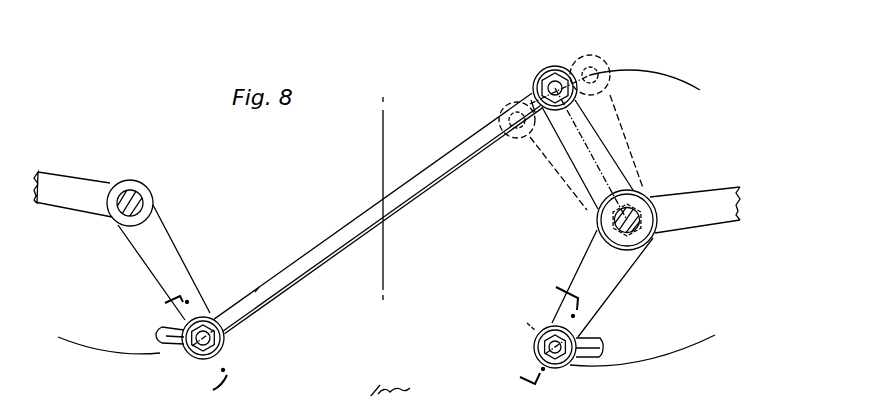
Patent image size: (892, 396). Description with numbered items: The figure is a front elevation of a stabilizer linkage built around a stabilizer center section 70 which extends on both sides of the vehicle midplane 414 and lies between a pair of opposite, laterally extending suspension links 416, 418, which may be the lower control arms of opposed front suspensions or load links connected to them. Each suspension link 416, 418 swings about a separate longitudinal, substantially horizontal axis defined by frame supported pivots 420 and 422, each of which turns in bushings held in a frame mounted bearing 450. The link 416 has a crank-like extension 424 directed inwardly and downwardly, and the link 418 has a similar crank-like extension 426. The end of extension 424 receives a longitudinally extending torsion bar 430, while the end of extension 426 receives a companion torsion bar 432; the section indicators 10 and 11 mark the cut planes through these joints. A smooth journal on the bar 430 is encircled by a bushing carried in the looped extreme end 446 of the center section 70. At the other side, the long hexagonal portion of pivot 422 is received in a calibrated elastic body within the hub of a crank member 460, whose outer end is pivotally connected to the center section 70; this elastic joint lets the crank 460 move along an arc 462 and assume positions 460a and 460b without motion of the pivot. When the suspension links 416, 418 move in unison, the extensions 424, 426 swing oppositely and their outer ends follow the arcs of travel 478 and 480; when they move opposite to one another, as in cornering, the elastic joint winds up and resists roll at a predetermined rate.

The midplane 414 is at (385, 136).
The suspension link 416 is at (83, 200).
The suspension link 418 is at (697, 198).
The frame supported pivot 420 is at (142, 203).
The frame supported pivot 422 is at (617, 221).
The crank-like extension 424 is at (180, 267).
The crank-like extension 426 is at (588, 257).
The torsion bar 430 is at (172, 347).
The torsion bar 432 is at (590, 349).
The looped extreme end 446 is at (226, 332).
The frame mounted bearing 450 is at (396, 375).
The crank member 460 is at (593, 142).
The crank member position 460a is at (598, 65).
The crank member position 460b is at (540, 152).
The arc 462 is at (668, 75).
The arc of travel 478 is at (110, 357).
The arc of travel 480 is at (675, 360).
The stabilizer center section 70 is at (357, 293).
The section line 10 is at (193, 341).
The section line 11 is at (534, 329).